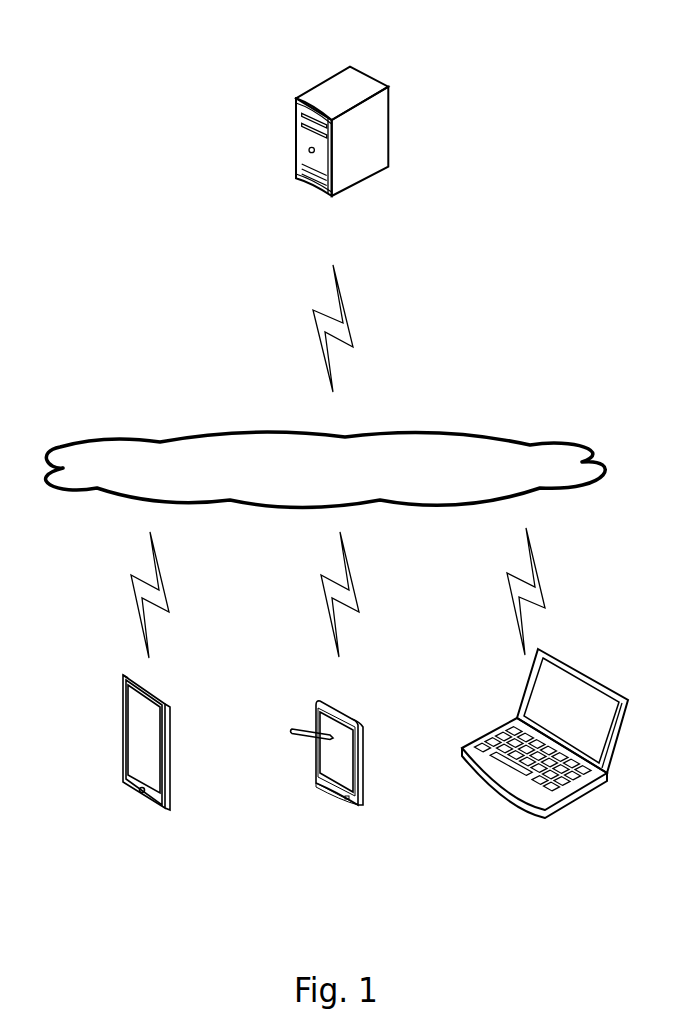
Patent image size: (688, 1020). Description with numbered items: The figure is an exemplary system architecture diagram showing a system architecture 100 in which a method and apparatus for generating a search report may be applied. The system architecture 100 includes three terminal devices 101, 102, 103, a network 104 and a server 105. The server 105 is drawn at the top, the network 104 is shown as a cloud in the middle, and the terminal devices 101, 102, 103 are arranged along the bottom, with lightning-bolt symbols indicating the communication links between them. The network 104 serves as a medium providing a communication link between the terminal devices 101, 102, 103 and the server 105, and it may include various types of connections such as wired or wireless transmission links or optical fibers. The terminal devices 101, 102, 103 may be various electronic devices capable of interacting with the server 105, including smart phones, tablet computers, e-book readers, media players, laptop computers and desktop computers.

The system architecture 100 is at (537, 38).
The terminal device 101 is at (545, 748).
The terminal device 102 is at (327, 774).
The terminal device 103 is at (146, 761).
The network 104 is at (326, 469).
The server 105 is at (342, 154).